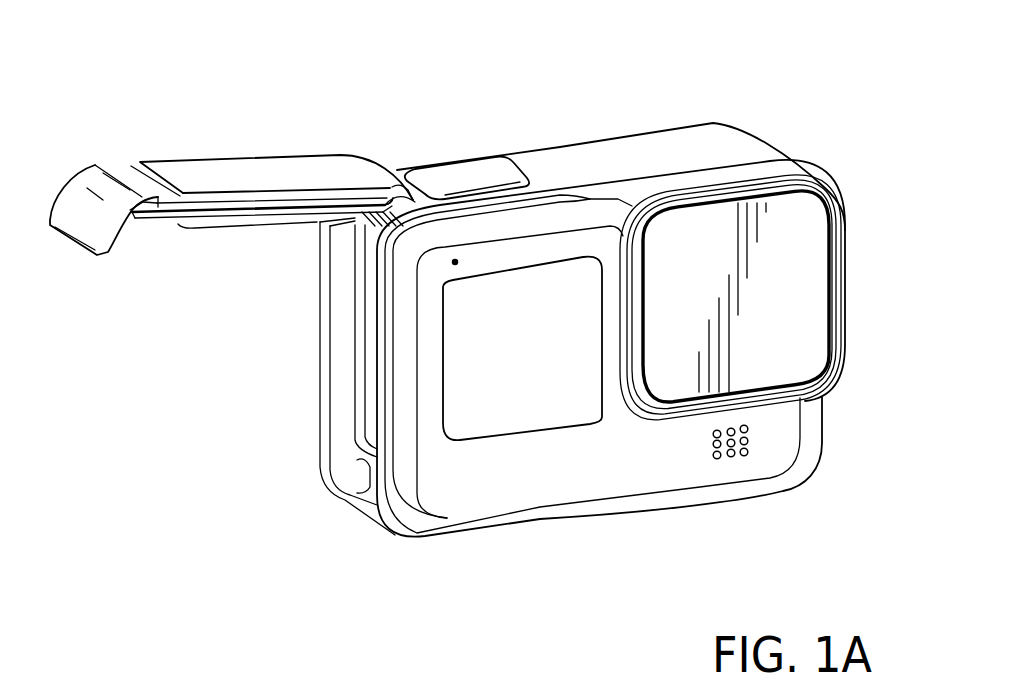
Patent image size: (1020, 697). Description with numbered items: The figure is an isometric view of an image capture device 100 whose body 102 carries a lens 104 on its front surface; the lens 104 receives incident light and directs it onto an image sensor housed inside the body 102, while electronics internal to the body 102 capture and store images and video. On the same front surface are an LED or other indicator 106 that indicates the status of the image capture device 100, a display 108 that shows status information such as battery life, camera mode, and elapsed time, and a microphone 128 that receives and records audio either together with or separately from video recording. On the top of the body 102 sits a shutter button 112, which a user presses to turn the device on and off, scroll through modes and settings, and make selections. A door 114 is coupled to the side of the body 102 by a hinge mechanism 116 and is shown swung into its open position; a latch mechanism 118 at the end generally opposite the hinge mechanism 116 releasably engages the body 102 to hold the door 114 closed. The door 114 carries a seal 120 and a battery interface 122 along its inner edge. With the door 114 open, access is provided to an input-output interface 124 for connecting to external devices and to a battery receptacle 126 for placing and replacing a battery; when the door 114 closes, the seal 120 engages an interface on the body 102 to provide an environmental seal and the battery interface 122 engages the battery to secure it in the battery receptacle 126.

The image capture device 100 is at (805, 59).
The body 102 is at (640, 137).
The lens 104 is at (803, 297).
The indicator 106 is at (455, 262).
The display 108 is at (525, 408).
The shutter button 112 is at (420, 175).
The door 114 is at (273, 167).
The hinge mechanism 116 is at (395, 185).
The latch mechanism 118 is at (77, 193).
The seal 120 is at (162, 223).
The battery interface 122 is at (215, 232).
The input-output (I/O) interface 124 is at (367, 470).
The battery receptacle 126 is at (364, 248).
The microphone 128 is at (731, 458).